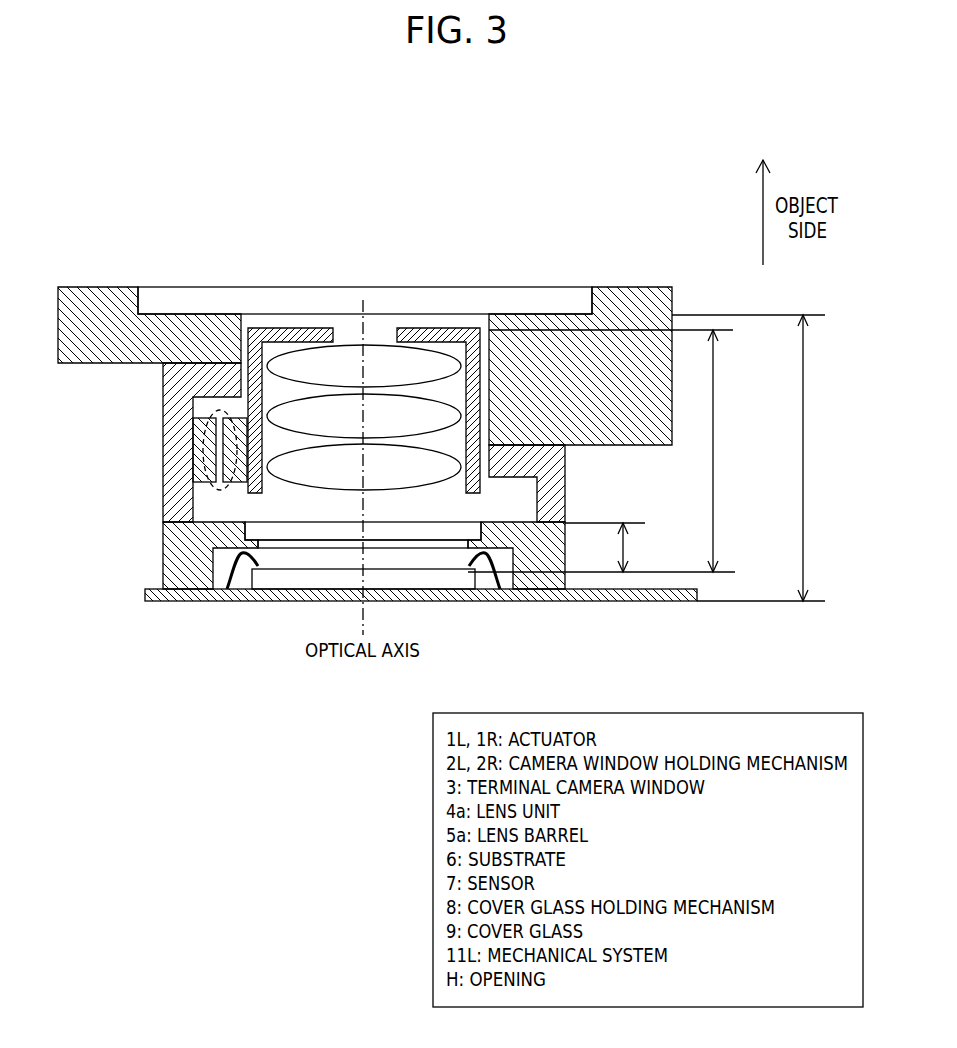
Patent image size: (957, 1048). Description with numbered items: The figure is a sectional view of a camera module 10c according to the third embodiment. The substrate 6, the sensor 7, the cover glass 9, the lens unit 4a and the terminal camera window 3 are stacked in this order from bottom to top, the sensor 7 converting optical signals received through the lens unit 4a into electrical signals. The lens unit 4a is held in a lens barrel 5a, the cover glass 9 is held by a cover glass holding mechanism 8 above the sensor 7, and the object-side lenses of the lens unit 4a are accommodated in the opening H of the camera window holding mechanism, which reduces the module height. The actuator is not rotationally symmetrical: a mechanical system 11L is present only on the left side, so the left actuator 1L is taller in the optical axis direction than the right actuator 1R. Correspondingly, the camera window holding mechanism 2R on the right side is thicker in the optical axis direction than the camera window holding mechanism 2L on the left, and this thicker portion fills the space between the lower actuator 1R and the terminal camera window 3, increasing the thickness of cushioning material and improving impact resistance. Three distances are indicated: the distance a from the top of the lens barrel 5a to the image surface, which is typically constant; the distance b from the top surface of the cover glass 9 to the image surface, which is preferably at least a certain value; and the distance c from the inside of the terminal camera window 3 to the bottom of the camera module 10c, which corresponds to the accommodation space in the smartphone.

The camera module 10c is at (613, 182).
The actuator 1L is at (168, 402).
The actuator 1R is at (557, 486).
The camera window holding mechanism 2L is at (102, 297).
The camera window holding mechanism 2R is at (632, 298).
The terminal camera window 3 is at (305, 297).
The lens unit 4a is at (390, 463).
The lens barrel 5a is at (256, 328).
The substrate 6 is at (215, 601).
The sensor 7 is at (278, 580).
The cover glass holding mechanism 8 is at (168, 560).
The cover glass 9 is at (445, 534).
The mechanical system 11L is at (197, 451).
The opening H is at (345, 333).
The distance a is at (601, 451).
The distance b is at (605, 547).
The distance c is at (748, 458).